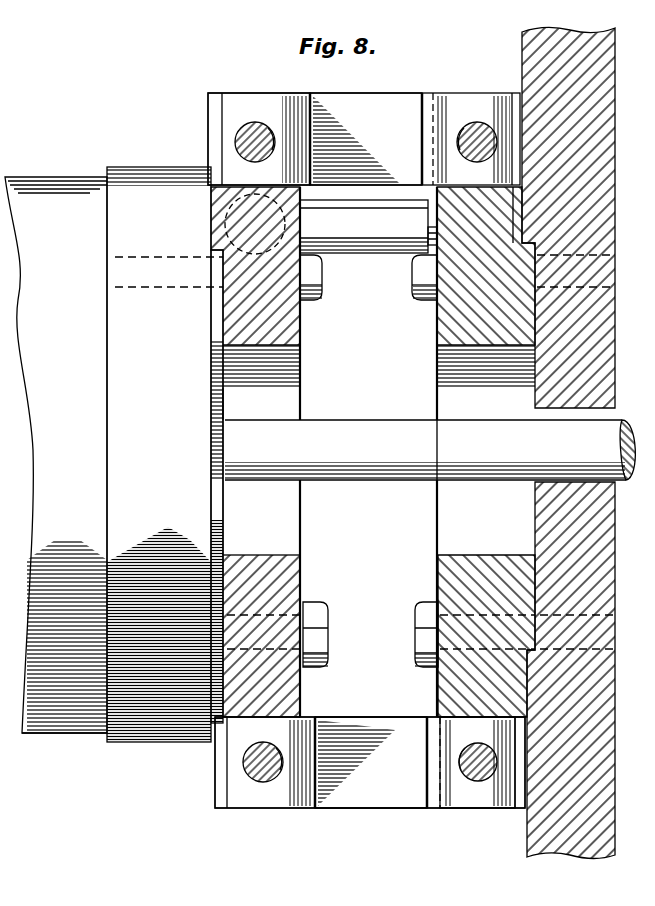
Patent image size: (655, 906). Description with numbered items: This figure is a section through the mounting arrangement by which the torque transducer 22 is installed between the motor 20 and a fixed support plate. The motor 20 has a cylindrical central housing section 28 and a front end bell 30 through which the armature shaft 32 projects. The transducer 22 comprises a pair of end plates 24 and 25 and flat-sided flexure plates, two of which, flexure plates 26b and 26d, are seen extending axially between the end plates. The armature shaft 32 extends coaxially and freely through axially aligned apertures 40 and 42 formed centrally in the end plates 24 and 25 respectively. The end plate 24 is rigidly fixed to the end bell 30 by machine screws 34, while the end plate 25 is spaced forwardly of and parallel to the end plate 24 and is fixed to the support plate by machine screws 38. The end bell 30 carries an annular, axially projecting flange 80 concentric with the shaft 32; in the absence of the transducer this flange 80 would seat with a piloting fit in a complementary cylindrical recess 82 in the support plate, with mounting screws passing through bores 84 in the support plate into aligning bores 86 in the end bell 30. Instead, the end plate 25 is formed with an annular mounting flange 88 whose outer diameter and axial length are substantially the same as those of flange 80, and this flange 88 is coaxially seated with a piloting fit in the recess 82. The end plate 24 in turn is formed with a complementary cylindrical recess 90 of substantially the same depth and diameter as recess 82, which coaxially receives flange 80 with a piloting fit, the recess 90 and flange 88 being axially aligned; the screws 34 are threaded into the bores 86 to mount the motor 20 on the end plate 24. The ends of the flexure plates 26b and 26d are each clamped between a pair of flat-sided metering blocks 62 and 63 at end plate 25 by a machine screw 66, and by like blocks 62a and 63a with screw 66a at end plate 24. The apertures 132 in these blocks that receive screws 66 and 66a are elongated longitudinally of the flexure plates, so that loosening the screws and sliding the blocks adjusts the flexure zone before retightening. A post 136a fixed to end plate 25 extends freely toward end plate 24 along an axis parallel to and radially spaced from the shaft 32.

The motor 20 is at (65, 740).
The transducer 22 is at (255, 822).
The end plate 24 is at (303, 336).
The end plate 25 is at (433, 332).
The flexure plate 26b is at (373, 92).
The flexure plate 26d is at (357, 810).
The central housing section 28 is at (36, 175).
The end bell 30 is at (123, 167).
The armature shaft 32 is at (625, 420).
The machine screws 34 is at (328, 294).
The machine screws 38 is at (405, 293).
The aperture 40 is at (300, 541).
The aperture 42 is at (446, 553).
The metering block 62 is at (450, 95).
The metering block 62a is at (233, 800).
The metering block 63 is at (463, 800).
The metering block 63a is at (238, 100).
The machine screw 66 is at (477, 125).
The machine screw 66a is at (253, 127).
The flange 80 is at (226, 406).
The recess 82 is at (530, 394).
The bores 84 is at (580, 253).
The bores 86 is at (123, 259).
The mounting flange 88 is at (517, 560).
The recess 90 is at (216, 306).
The apertures 132 is at (453, 137).
The post 136a is at (410, 266).